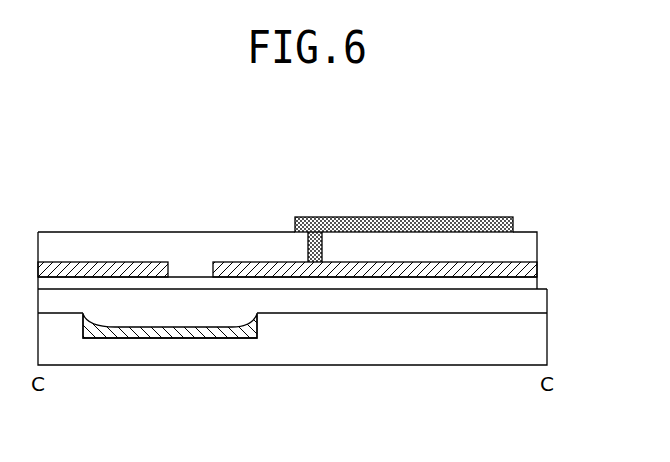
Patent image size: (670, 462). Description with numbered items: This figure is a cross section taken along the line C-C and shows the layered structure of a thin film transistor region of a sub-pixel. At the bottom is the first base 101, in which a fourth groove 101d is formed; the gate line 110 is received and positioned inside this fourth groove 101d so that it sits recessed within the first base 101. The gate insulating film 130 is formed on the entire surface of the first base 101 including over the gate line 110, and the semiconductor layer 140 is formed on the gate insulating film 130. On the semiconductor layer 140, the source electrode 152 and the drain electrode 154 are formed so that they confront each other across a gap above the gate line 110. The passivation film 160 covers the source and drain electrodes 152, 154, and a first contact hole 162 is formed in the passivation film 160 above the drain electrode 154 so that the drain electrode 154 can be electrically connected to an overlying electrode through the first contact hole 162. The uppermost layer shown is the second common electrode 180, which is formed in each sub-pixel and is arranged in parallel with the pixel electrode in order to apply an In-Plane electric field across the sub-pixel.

The first base 101 is at (545, 348).
The fourth groove 101d is at (243, 338).
The gate line 110 is at (173, 332).
The gate insulating film 130 is at (545, 307).
The semiconductor layer 140 is at (530, 280).
The source electrode 152 is at (112, 264).
The drain electrode 154 is at (303, 262).
The passivation film 160 is at (530, 250).
The first contact hole 162 is at (320, 247).
The second common electrode 180 is at (513, 224).